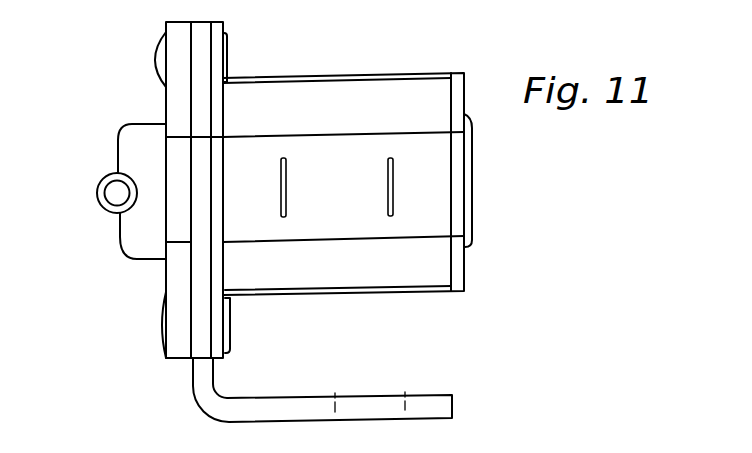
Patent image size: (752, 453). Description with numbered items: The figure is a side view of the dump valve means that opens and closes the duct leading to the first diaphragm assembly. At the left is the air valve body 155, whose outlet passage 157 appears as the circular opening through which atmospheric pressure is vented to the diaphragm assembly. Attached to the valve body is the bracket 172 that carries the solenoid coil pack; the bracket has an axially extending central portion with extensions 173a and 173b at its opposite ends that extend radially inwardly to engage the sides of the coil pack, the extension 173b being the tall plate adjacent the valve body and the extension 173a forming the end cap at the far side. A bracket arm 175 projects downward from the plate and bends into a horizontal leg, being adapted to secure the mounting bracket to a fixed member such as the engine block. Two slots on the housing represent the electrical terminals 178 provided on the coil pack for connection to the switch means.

The air valve body 155 is at (129, 257).
The outlet passage 157 is at (112, 201).
The bracket 172 is at (384, 75).
The extension 173a is at (460, 268).
The extension 173b is at (218, 118).
The bracket arm 175 is at (308, 402).
The electrical terminals 178 is at (388, 177).